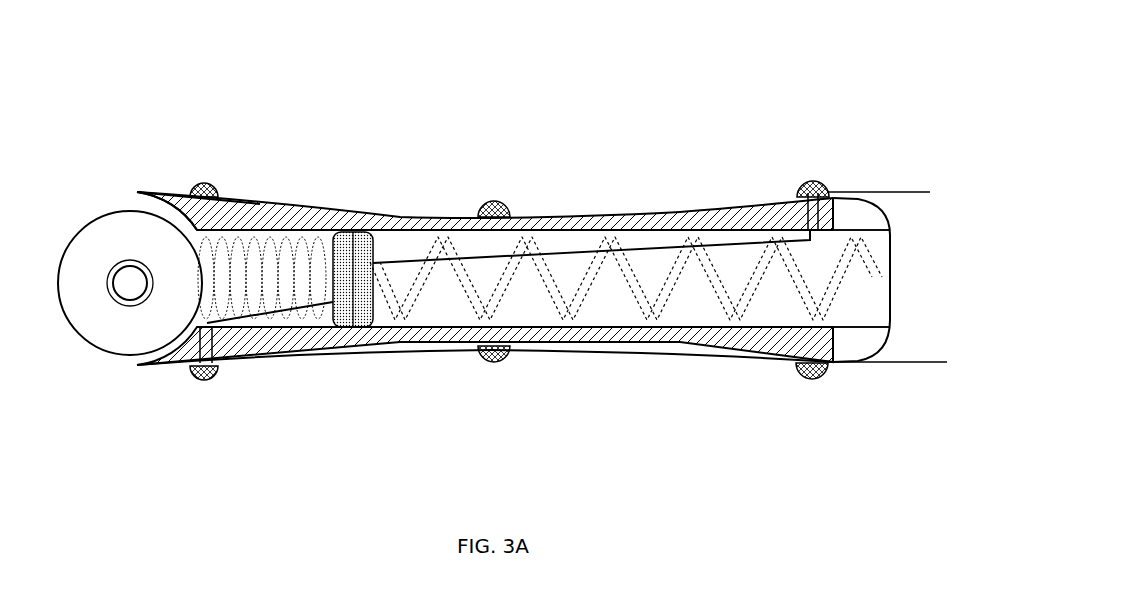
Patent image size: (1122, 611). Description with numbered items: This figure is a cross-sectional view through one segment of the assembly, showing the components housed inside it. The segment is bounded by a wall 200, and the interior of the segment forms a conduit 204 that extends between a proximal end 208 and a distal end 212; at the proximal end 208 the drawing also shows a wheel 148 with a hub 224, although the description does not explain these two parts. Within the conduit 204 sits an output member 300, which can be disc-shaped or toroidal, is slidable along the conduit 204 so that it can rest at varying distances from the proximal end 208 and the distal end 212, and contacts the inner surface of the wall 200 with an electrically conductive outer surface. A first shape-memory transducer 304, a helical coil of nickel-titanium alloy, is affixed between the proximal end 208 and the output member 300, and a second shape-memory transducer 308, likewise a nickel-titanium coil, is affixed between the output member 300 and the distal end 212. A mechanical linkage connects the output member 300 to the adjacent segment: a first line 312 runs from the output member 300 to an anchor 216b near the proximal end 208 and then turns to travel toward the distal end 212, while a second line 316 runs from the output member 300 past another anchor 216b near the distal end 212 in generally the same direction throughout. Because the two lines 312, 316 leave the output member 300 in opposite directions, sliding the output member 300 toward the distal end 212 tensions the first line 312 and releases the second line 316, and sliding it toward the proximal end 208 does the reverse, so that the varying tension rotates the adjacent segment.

The wheel 148 is at (99, 333).
The wall 200 is at (700, 212).
The conduit 204 is at (603, 310).
The proximal end 208 is at (136, 190).
The distal end 212 is at (892, 262).
The anchor 216b is at (205, 182).
The axle hub 224 is at (126, 290).
The output member 300 is at (360, 250).
The first shape-memory transducer 304 is at (282, 243).
The second shape-memory transducer 308 is at (610, 243).
The first line 312 is at (289, 314).
The second line 316 is at (648, 247).